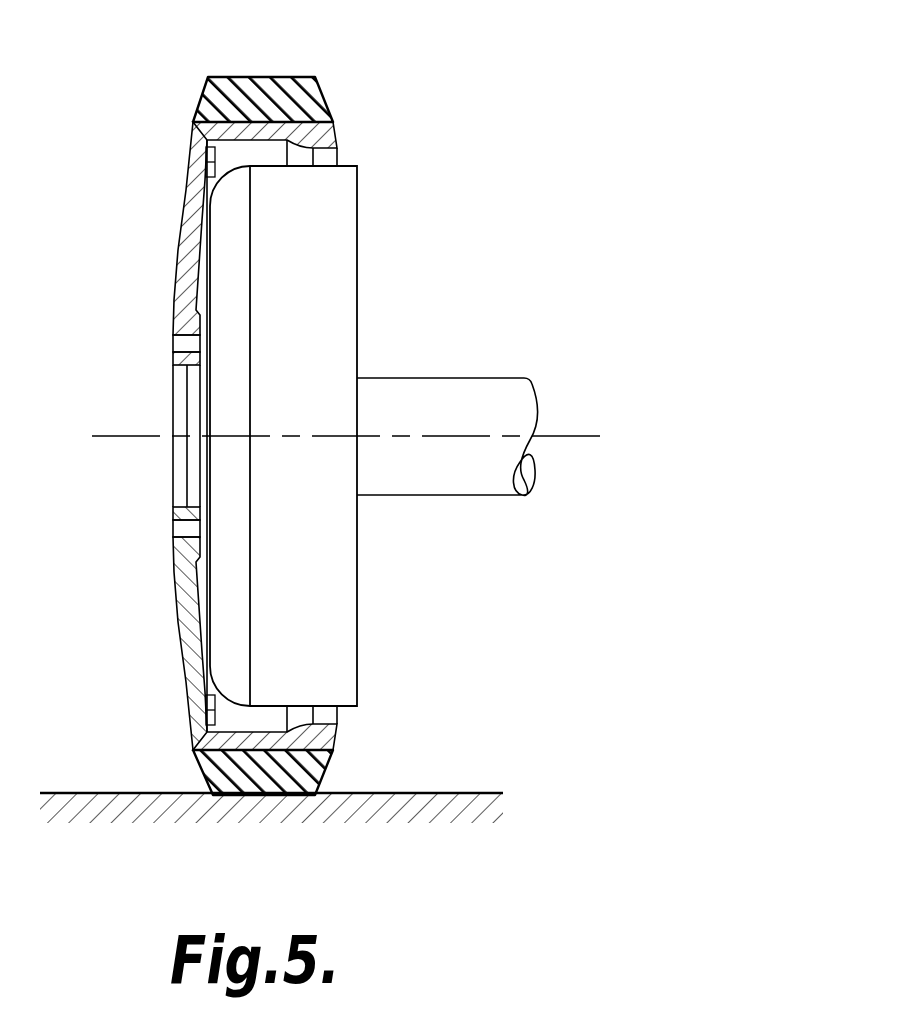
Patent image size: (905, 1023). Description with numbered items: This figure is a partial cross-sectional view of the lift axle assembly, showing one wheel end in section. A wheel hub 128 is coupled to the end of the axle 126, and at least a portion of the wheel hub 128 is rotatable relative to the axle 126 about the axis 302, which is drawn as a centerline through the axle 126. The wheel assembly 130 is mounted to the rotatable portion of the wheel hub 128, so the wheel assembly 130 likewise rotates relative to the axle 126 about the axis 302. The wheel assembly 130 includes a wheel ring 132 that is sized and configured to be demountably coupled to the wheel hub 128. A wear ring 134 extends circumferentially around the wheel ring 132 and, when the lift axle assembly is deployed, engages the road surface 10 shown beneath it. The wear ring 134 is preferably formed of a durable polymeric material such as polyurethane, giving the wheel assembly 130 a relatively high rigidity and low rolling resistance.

The road surface 10 is at (420, 793).
The axle 126 is at (478, 380).
The wheel hub 128 is at (358, 218).
The wheel assembly 130 is at (191, 736).
The wheel ring 132 is at (335, 130).
The wear ring 134 is at (297, 73).
The axis 302 is at (120, 436).